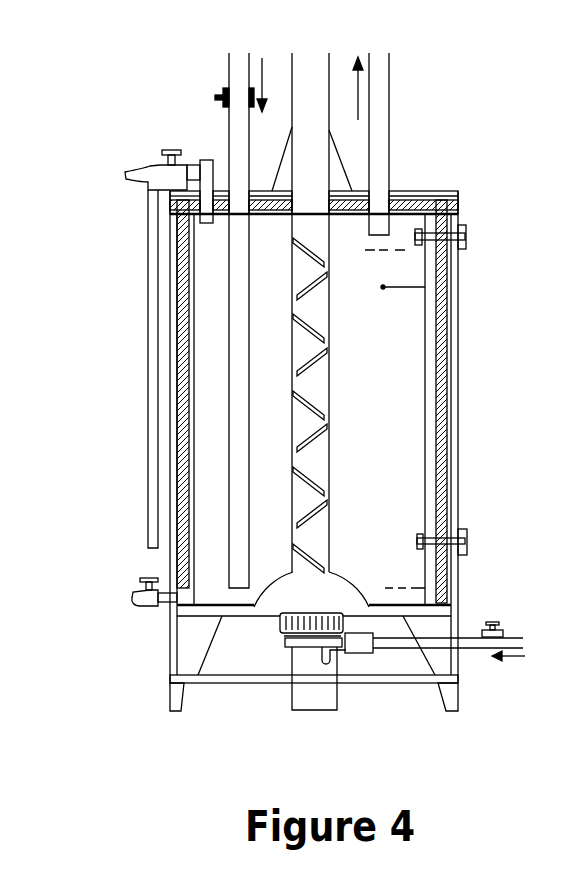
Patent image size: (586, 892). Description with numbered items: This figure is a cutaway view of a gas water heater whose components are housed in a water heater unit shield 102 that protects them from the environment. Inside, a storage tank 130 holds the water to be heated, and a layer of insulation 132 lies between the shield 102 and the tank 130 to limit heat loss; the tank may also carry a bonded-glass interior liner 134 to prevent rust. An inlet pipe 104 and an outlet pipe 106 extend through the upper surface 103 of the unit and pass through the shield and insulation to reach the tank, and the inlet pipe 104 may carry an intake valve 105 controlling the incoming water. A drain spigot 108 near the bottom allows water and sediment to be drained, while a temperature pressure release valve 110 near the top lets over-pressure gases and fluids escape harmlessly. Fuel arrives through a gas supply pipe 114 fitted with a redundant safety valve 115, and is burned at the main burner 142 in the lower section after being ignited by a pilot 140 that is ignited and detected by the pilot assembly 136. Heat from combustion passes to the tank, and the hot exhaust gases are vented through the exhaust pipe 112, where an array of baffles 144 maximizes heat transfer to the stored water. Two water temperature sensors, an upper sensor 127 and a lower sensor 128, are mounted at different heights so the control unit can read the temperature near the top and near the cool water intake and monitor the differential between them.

The water heater unit shield 102 is at (458, 432).
The upper surface 103 is at (413, 190).
The inlet pipe 104 is at (228, 125).
The intake valve 105 is at (220, 100).
The outlet pipe 106 is at (389, 127).
The drain spigot 108 is at (133, 590).
The temperature pressure release valve 110 is at (125, 173).
The exhaust pipe 112 is at (292, 130).
The gas supply pipe 114 is at (500, 637).
The redundant safety valve 115 is at (484, 625).
The upper sensor 127 is at (465, 243).
The lower sensor 128 is at (467, 545).
The storage tank 130 is at (425, 313).
The insulation 132 is at (455, 367).
The bonded-glass interior liner 134 is at (425, 340).
The pilot assembly 136 is at (352, 653).
The pilot 140 is at (313, 710).
The main burner 142 is at (313, 610).
The baffles 144 is at (330, 458).